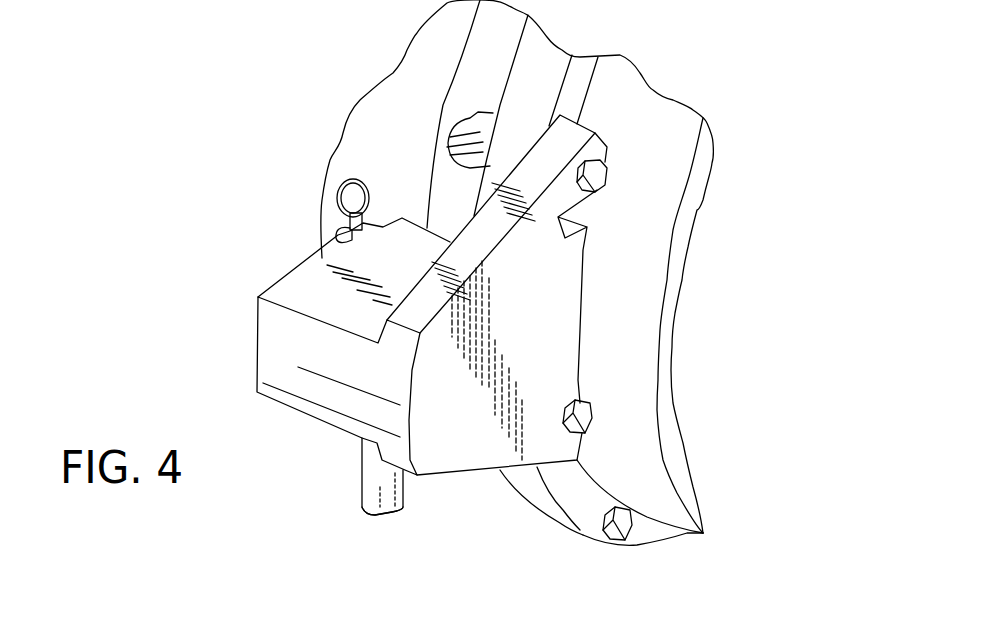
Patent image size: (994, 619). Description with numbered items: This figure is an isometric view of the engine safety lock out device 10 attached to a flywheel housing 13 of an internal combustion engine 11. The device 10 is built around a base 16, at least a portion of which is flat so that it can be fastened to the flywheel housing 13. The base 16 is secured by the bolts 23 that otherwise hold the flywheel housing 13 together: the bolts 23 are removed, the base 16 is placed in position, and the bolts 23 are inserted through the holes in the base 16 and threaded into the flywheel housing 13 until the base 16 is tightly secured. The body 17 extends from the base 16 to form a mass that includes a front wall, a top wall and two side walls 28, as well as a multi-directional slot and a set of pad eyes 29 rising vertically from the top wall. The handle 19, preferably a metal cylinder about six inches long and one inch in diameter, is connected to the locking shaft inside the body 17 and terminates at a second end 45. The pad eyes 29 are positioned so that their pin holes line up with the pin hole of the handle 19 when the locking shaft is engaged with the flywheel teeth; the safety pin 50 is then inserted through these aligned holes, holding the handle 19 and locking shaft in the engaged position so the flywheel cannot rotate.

The engine safety lock out device 10 is at (334, 352).
The internal combustion engine 11 is at (740, 100).
The flywheel housing 13 is at (657, 216).
The base 16 is at (535, 338).
The body 17 is at (292, 350).
The handle 19 is at (360, 470).
The bolts 23 is at (597, 170).
The side walls 28 is at (417, 268).
The set of pad eyes 29 is at (337, 225).
The second end 45 is at (385, 517).
The safety pin 50 is at (372, 193).